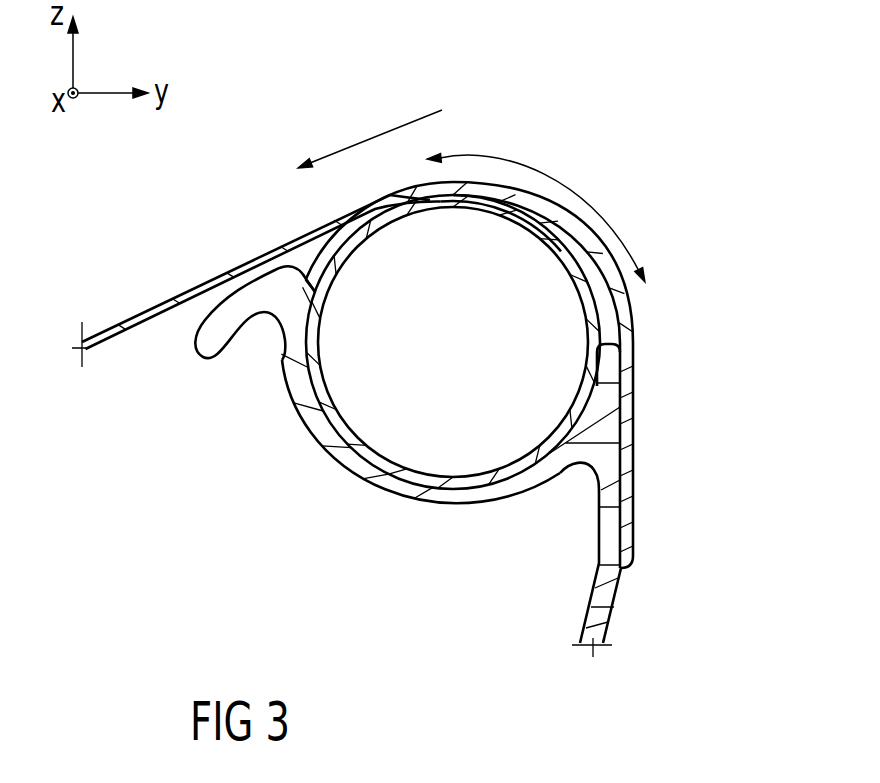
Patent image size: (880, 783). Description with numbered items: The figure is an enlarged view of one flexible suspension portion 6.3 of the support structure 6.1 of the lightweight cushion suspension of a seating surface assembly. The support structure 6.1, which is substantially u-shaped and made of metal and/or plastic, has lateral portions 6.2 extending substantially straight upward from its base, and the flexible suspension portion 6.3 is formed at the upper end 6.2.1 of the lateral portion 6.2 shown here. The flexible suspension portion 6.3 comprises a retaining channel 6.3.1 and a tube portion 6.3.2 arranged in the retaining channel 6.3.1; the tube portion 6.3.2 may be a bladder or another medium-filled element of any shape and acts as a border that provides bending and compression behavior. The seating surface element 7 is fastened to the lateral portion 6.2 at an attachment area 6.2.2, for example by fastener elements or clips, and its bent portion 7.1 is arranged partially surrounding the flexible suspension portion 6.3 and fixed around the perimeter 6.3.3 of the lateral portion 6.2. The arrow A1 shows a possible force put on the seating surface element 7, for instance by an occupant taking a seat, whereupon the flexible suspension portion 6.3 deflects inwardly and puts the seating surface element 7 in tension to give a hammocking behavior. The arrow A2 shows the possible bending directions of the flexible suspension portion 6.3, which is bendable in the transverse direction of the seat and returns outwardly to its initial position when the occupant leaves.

The seating surface element 7 is at (185, 290).
The bent portion 7.1 is at (598, 233).
The flexible suspension portion 6.3 is at (608, 362).
The retaining channel 6.3.1 is at (517, 488).
The tube portion 6.3.2 is at (347, 348).
The perimeter 6.3.3 is at (612, 440).
The lateral portion 6.2 is at (622, 514).
The upper end 6.2.1 is at (610, 582).
The attachment area 6.2.2 is at (627, 497).
The support structure 6.1 is at (580, 643).
The arrow A1 is at (370, 137).
The arrow A2 is at (536, 211).